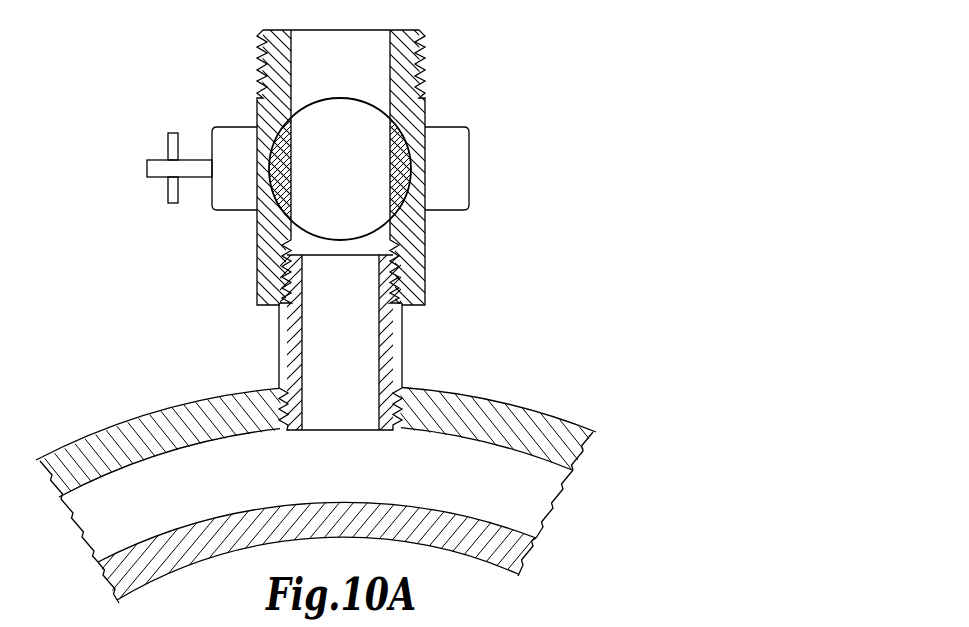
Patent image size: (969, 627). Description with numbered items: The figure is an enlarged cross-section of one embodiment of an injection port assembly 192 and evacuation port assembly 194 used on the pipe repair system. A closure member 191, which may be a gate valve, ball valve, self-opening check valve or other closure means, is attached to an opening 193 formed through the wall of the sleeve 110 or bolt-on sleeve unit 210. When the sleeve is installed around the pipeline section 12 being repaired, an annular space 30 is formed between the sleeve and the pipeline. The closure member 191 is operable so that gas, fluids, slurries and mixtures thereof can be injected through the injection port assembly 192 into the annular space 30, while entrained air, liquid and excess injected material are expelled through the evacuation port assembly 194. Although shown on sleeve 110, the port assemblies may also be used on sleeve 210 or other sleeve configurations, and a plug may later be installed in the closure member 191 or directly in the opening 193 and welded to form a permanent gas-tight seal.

The injection port assembly 192 is at (355, 165).
The evacuation port assembly 194 is at (460, 73).
The closure member 191 is at (344, 305).
The opening 193 is at (348, 417).
The sleeve 110 is at (353, 437).
The bolt-on sleeve unit 210 is at (520, 420).
The annular space 30 is at (233, 489).
The pipeline section 12 is at (443, 542).